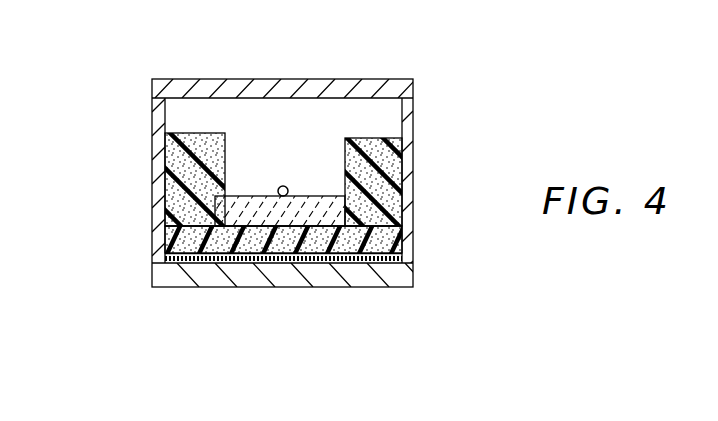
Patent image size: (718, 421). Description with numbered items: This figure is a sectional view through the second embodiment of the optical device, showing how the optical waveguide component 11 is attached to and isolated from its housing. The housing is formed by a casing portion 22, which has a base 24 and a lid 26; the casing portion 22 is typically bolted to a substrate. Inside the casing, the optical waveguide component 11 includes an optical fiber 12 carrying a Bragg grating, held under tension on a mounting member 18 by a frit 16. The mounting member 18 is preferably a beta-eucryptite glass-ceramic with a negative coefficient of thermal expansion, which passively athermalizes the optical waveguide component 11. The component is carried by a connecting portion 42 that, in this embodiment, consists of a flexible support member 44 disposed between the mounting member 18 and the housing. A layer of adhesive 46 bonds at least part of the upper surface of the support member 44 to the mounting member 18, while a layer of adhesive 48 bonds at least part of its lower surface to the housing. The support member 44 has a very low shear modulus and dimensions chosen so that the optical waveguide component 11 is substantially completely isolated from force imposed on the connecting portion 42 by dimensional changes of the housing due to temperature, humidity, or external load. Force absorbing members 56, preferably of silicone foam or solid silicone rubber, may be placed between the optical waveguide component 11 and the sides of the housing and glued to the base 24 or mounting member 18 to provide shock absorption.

The optical waveguide component 11 is at (298, 174).
The optical fiber 12 is at (278, 193).
The frit 16 is at (284, 186).
The mounting member 18 is at (341, 196).
The casing portion 22 is at (320, 177).
The base 24 is at (414, 128).
The lid 26 is at (353, 80).
The connecting portion 42 is at (273, 200).
The flexible support member 44 is at (400, 246).
The layer of adhesive 46 is at (366, 214).
The layer of adhesive 48 is at (395, 287).
The force absorbing member 56 is at (345, 138).